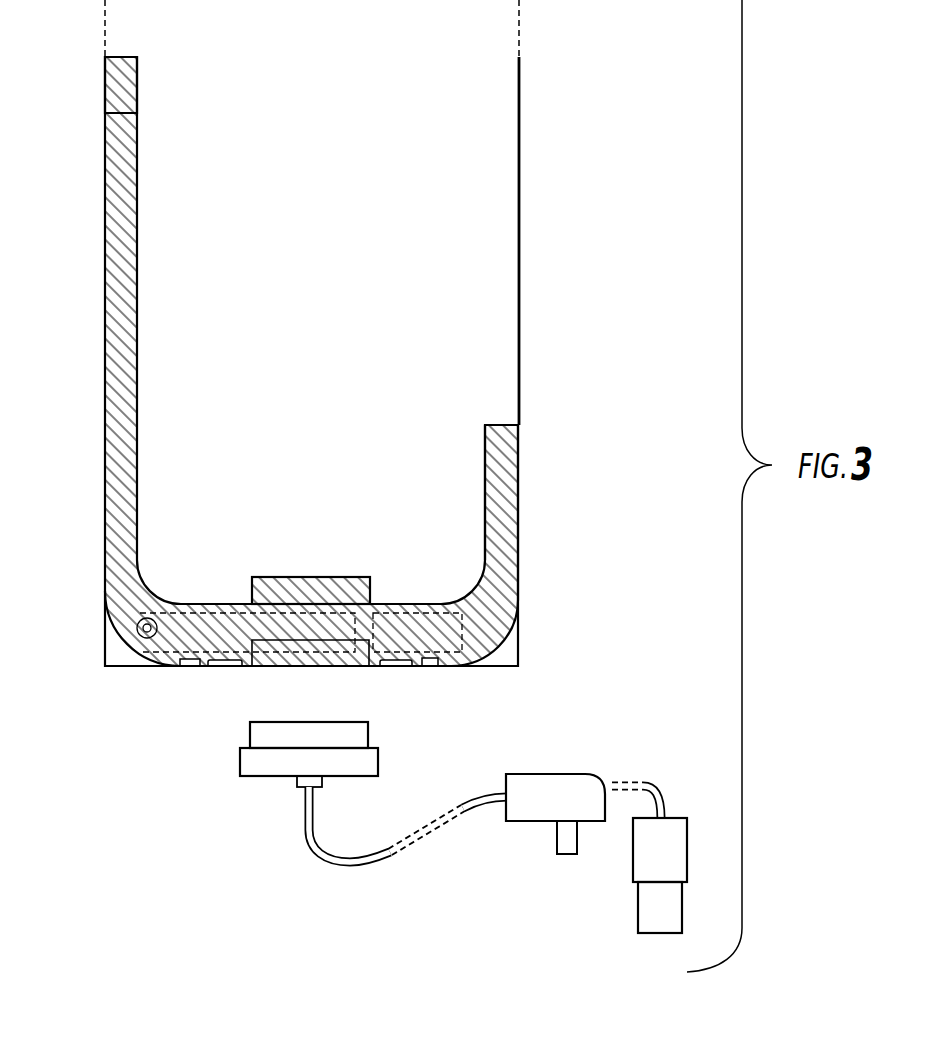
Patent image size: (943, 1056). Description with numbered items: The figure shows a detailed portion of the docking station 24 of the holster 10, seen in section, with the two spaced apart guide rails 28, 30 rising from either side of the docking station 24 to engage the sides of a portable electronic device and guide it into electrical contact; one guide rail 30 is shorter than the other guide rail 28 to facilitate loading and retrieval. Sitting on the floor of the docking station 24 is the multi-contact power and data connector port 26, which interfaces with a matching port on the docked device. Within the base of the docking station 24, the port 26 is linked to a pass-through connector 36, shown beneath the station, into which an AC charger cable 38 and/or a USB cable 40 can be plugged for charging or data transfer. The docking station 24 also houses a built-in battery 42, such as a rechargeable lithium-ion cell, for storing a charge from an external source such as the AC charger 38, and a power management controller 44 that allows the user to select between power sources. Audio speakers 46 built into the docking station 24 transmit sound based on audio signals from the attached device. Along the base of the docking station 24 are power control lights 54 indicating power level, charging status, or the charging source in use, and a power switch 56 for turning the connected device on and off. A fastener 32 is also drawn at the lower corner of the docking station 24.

The holster 10 is at (92, 336).
The docking station 24 is at (502, 635).
The multi-contact port 26 is at (340, 582).
The guide rail 28 is at (130, 138).
The guide rail 30 is at (508, 462).
The fastener 32 is at (145, 637).
The pass-through connector 36 is at (283, 645).
The AC charger cable 38 is at (530, 822).
The USB cable 40 is at (632, 852).
The built-in battery 42 is at (213, 628).
The power management controller 44 is at (419, 630).
The audio speakers 46 is at (230, 667).
The power control lights 54 is at (433, 667).
The power switch 56 is at (190, 667).